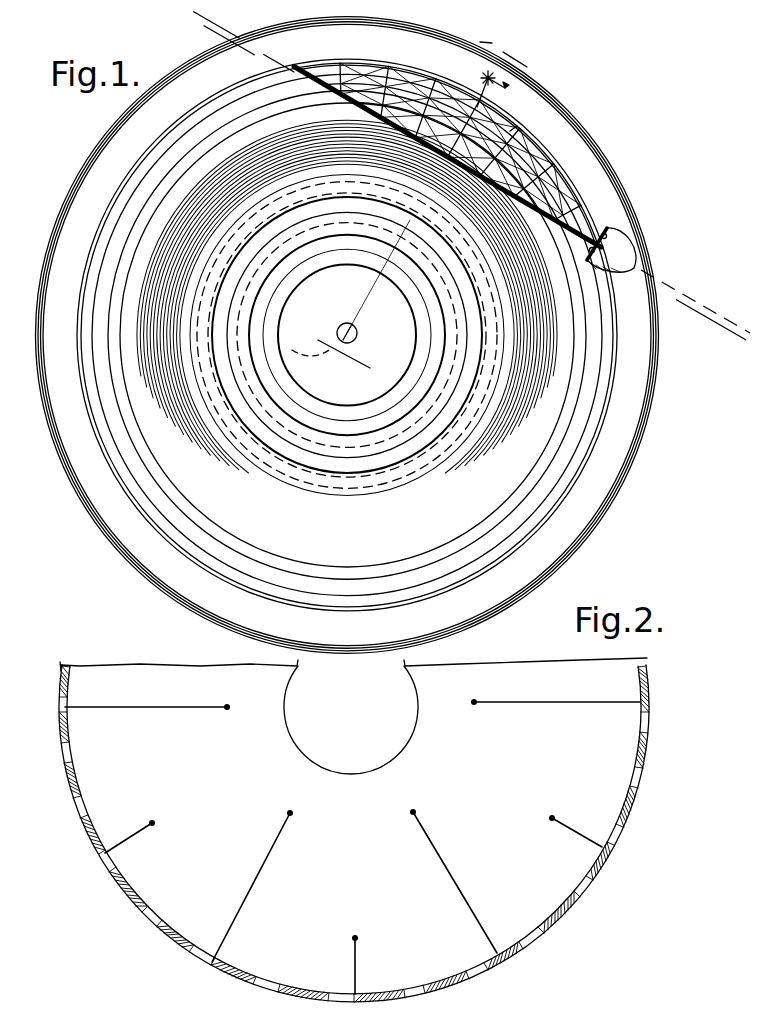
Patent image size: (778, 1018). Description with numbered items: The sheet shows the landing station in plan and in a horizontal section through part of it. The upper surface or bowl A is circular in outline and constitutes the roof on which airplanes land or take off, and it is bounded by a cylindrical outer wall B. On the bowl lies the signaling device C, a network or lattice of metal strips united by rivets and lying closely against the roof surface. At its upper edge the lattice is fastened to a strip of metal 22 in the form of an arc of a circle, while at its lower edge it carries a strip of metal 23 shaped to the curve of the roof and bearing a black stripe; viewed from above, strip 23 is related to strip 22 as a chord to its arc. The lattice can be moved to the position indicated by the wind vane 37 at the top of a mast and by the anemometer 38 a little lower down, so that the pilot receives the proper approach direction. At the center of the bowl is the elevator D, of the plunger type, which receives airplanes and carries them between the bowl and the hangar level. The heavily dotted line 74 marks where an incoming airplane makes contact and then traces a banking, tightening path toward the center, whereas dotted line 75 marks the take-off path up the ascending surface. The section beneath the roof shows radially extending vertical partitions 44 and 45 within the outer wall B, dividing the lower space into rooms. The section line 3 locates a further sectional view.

In FIG. 1, the upper surface or bowl A is at (657, 357).
In FIG. 2, the cylindrical outer wall B is at (650, 708).
In FIG. 1, the signaling device C is at (517, 126).
In FIG. 1, the elevator D is at (347, 334).
In FIG. 1, the section line 3 is at (395, 204).
In FIG. 1, the strip of metal 22 is at (414, 66).
In FIG. 1, the strip of metal 23 is at (522, 159).
In FIG. 1, the wind vane 37 is at (505, 88).
In FIG. 1, the anemometer 38 is at (488, 78).
In FIG. 2, the radially extending vertical partition 44 is at (433, 852).
In FIG. 2, the radially extending vertical partition 45 is at (357, 938).
In FIG. 1, the heavily dotted line 74 is at (694, 303).
In FIG. 1, the dotted line 75 is at (215, 32).